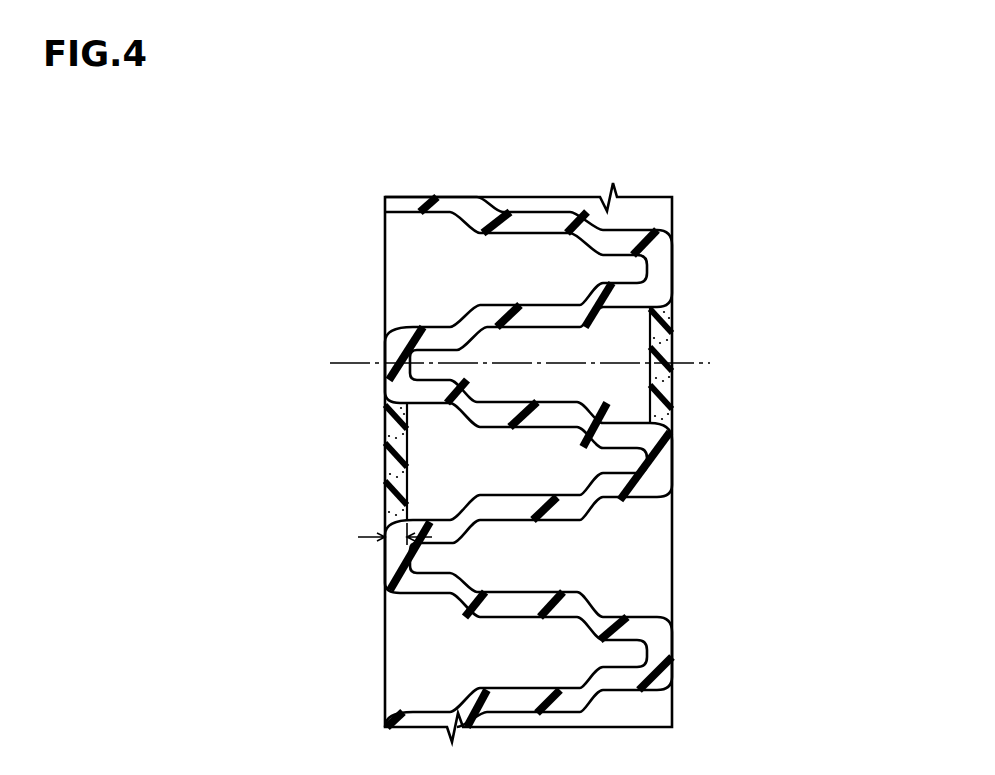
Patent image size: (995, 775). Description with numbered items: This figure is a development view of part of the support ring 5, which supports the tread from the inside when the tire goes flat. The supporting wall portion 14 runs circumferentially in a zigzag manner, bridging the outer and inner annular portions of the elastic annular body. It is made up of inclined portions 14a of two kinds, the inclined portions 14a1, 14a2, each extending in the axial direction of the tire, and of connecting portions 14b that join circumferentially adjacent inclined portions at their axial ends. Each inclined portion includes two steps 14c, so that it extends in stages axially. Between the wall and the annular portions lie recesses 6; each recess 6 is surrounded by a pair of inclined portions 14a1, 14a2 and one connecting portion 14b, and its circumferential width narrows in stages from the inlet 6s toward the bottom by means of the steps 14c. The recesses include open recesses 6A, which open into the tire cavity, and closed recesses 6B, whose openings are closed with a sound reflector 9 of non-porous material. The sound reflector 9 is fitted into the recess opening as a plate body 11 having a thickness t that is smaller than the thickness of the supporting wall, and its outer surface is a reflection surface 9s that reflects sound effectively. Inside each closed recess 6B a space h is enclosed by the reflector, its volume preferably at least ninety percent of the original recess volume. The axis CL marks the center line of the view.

The support ring 5 is at (714, 175).
The recess 6 is at (612, 462).
The open recess 6A is at (443, 653).
The closed recess 6B is at (457, 469).
The inlet 6s is at (390, 692).
The sound reflector 9 is at (507, 416).
The reflection surface 9s is at (392, 427).
The plate body 11 is at (392, 507).
The supporting wall portion 14 is at (526, 409).
The inclined portion 14a is at (526, 462).
The first inclined portion 14a1 is at (391, 273).
The second inclined portion 14a2 is at (643, 498).
The connecting portion 14b is at (392, 346).
The step 14c is at (580, 293).
The thickness of the plate body t is at (400, 548).
The center line CL is at (700, 366).
The space h is at (615, 355).